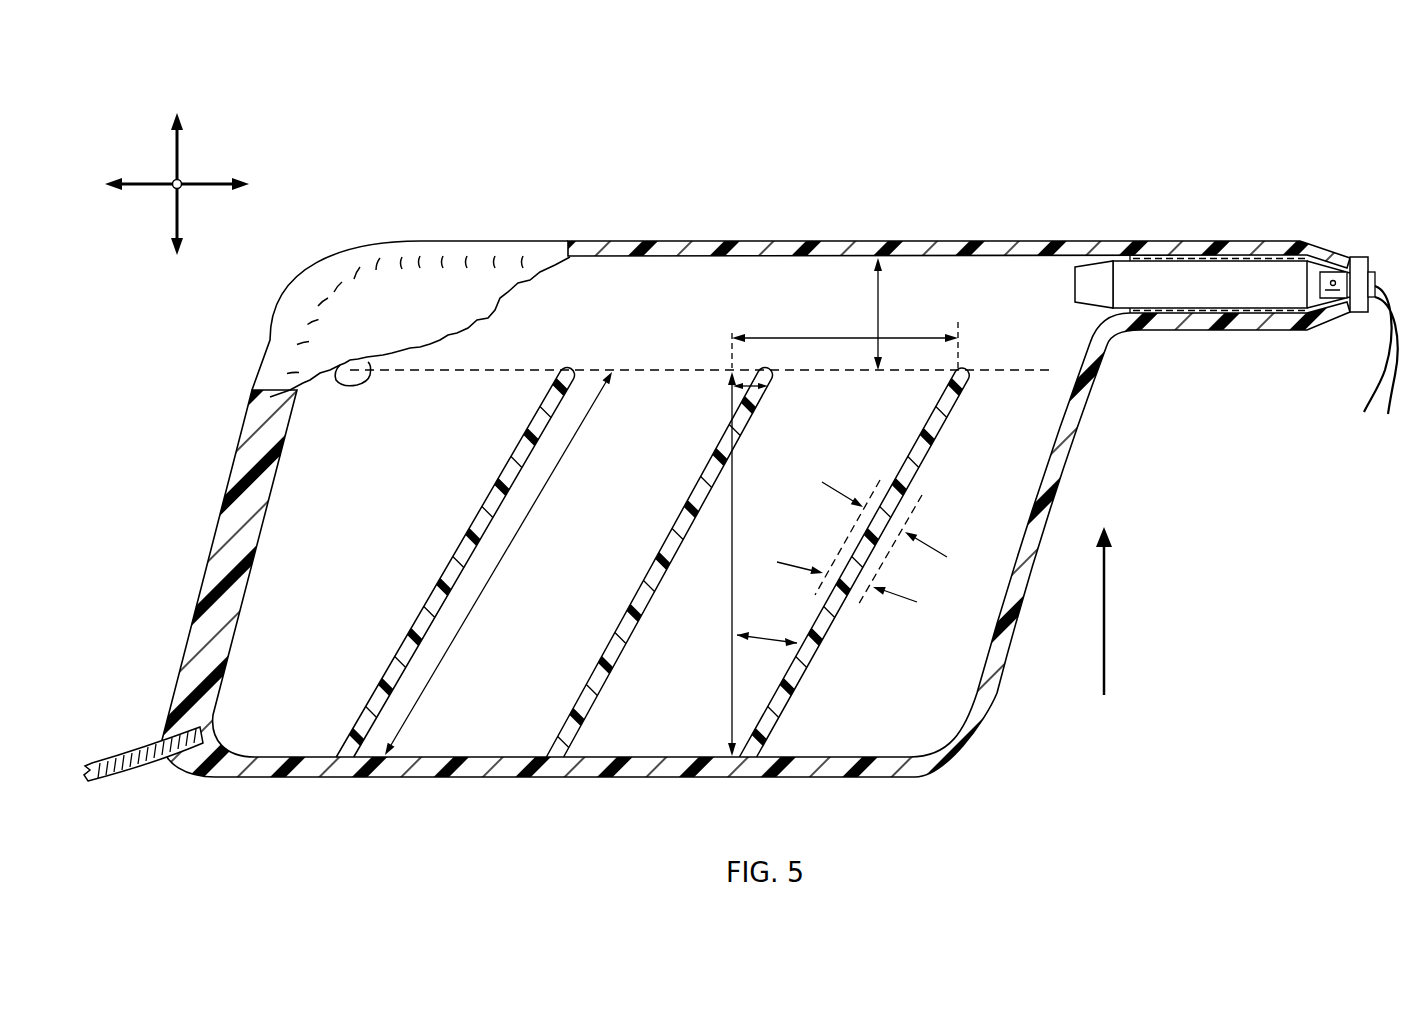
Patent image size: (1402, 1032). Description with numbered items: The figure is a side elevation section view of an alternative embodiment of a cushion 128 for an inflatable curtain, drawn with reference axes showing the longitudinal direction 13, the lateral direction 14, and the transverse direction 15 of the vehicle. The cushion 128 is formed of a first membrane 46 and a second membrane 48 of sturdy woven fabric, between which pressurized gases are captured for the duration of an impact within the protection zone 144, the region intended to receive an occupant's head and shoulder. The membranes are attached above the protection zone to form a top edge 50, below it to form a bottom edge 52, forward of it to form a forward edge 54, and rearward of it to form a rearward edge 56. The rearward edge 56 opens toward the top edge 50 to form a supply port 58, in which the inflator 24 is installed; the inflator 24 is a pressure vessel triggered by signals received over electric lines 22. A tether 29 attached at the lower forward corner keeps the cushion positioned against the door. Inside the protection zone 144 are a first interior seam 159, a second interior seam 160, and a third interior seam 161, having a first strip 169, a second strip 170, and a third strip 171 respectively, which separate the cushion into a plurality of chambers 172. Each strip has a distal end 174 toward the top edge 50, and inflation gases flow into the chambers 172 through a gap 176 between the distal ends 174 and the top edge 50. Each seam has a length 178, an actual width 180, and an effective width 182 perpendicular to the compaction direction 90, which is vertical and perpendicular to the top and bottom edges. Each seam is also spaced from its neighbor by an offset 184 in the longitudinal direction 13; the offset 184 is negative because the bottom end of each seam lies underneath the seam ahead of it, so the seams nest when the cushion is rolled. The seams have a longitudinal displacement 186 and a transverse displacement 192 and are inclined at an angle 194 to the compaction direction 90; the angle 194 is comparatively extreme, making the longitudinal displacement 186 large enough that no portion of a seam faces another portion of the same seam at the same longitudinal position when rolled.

The longitudinal direction 13 is at (205, 188).
The lateral direction 14 is at (179, 182).
The transverse direction 15 is at (180, 148).
The electric lines 22 is at (1400, 262).
The inflator 24 is at (1263, 276).
The tether 29 is at (120, 762).
The first membrane 46 is at (548, 288).
The second membrane 48 is at (327, 381).
The top edge 50 is at (625, 245).
The bottom edge 52 is at (490, 773).
The forward edge 54 is at (228, 494).
The rearward edge 56 is at (1058, 457).
The supply port 58 is at (1252, 331).
The compaction direction 90 is at (1108, 625).
The cushion 128 is at (736, 472).
The protection zone 144 is at (734, 285).
The first interior seam 159 is at (426, 562).
The second interior seam 160 is at (647, 562).
The third interior seam 161 is at (876, 562).
The first strip 169 is at (488, 516).
The second strip 170 is at (670, 540).
The third strip 171 is at (947, 412).
The chambers 172 is at (323, 565).
The distal end 174 is at (566, 372).
The gap 176 is at (882, 318).
The length 178 is at (455, 657).
The actual width 180 is at (930, 537).
The effective width 182 is at (902, 600).
The offset 184 is at (764, 390).
The longitudinal displacement 186 is at (816, 338).
The transverse displacement 192 is at (735, 548).
The angle 194 is at (762, 648).